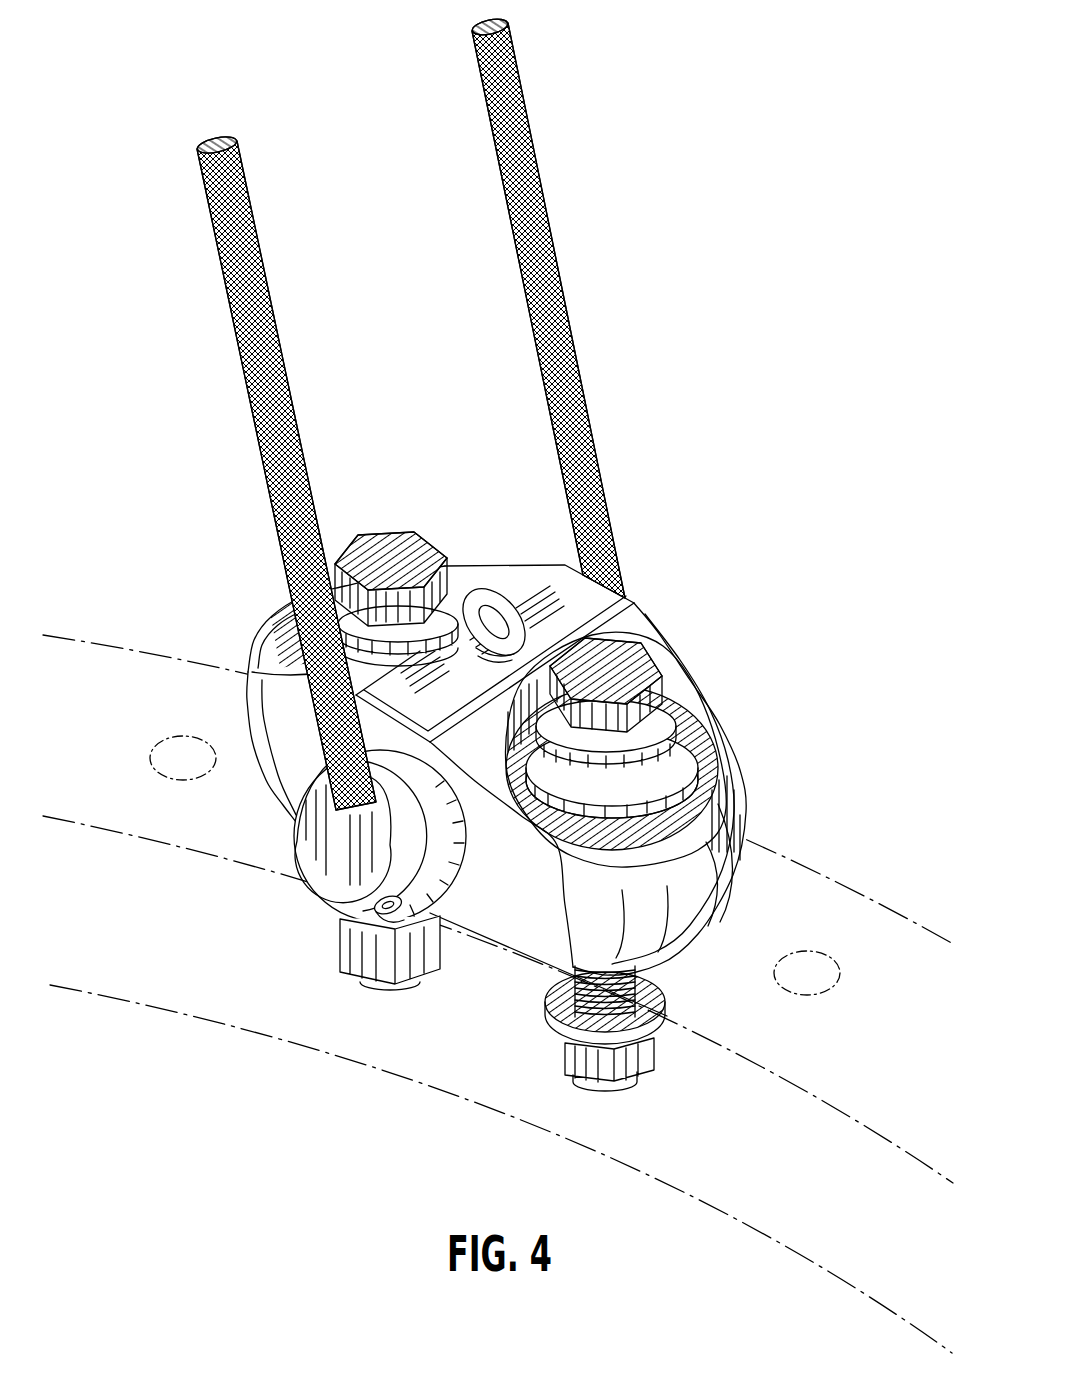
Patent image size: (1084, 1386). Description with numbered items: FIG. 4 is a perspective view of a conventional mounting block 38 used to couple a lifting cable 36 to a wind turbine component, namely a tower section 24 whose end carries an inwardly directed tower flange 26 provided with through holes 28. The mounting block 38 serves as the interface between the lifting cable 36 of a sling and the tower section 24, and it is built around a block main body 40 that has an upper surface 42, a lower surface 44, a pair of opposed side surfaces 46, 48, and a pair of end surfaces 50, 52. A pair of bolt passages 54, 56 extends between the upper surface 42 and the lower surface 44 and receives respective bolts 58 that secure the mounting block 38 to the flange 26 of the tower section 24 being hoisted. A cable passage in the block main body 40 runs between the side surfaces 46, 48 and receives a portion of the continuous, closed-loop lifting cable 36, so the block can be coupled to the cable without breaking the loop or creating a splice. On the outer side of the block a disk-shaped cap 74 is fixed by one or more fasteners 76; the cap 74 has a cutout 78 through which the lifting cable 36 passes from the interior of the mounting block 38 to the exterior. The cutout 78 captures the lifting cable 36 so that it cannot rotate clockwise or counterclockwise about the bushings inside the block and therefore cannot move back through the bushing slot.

The tower section 24 is at (916, 916).
The tower flange 26 is at (224, 1023).
The through holes 28 is at (152, 756).
The lifting cable 36 is at (588, 383).
The mounting block 38 is at (498, 792).
The block main body 40 is at (750, 817).
The upper surface 42 is at (531, 566).
The lower surface 44 is at (287, 820).
The side surface 46 is at (273, 720).
The side surface 48 is at (716, 719).
The end surface 50 is at (718, 915).
The end surface 52 is at (253, 668).
The bolt passage 54 is at (476, 578).
The bolt passage 56 is at (678, 687).
The bolts 58 is at (403, 532).
The disk-shaped cap 74 is at (308, 891).
The fasteners 76 is at (379, 905).
The cutout 78 is at (298, 788).